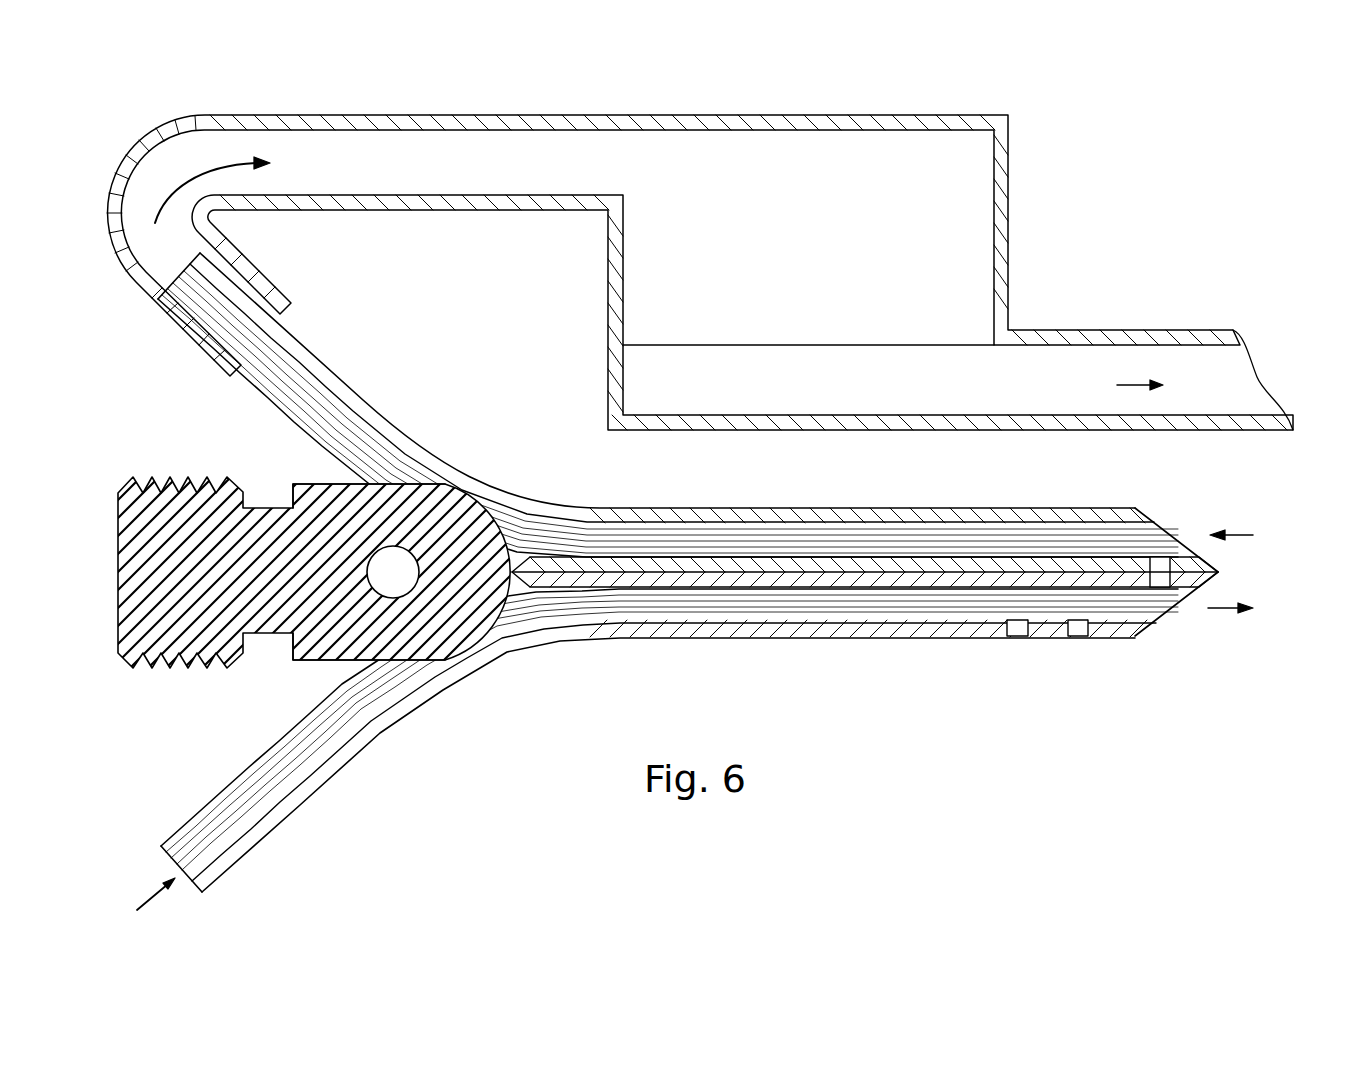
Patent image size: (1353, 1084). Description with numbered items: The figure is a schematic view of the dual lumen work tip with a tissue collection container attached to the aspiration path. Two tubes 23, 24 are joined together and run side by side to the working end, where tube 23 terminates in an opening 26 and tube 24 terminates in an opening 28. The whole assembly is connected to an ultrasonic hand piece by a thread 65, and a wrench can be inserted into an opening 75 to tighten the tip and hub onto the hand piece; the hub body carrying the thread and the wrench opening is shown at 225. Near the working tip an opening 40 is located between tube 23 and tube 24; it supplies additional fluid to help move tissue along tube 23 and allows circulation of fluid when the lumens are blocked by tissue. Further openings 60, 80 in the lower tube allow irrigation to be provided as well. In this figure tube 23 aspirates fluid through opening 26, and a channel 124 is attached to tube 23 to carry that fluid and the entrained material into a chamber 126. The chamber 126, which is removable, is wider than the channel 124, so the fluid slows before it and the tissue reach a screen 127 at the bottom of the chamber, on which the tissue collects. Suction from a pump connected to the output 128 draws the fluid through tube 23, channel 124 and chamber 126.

The tube 23 is at (845, 507).
The tube 24 is at (835, 638).
The opening 26 is at (1157, 521).
The opening 28 is at (1167, 613).
The opening 40 is at (1160, 562).
The opening 60 is at (1015, 634).
The opening 80 is at (1077, 636).
The thread 65 is at (349, 558).
The opening 75 is at (383, 575).
The flange 225 is at (313, 484).
The channel 124 is at (511, 212).
The chamber 126 is at (607, 375).
The screen 127 is at (920, 345).
The output 128 is at (1257, 377).